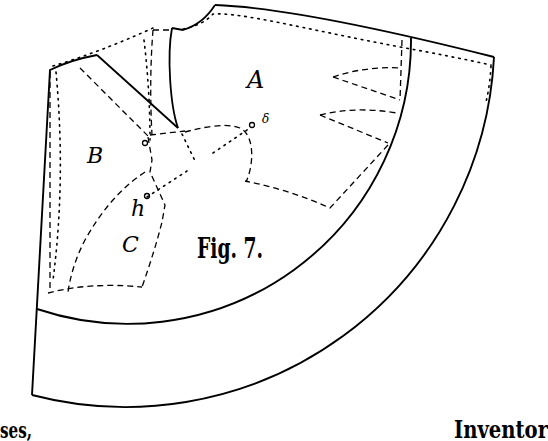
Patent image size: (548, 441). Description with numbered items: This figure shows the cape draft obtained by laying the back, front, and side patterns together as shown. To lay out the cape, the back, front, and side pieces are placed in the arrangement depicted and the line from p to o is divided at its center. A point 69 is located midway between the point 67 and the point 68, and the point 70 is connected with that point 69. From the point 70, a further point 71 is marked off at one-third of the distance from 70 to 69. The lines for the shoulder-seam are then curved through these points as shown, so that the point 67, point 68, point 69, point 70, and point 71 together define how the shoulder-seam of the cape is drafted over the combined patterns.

The shoulder point 67 is at (64, 225).
The shoulder point 68 is at (201, 74).
The midpoint 69 is at (144, 81).
The cape draft point 70 is at (197, 158).
The cape draft point 71 is at (150, 91).